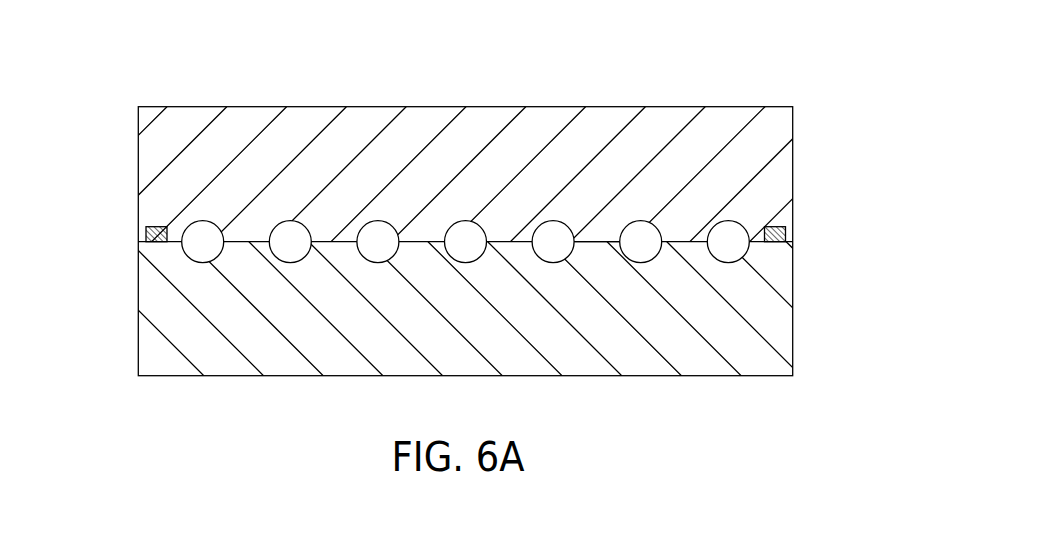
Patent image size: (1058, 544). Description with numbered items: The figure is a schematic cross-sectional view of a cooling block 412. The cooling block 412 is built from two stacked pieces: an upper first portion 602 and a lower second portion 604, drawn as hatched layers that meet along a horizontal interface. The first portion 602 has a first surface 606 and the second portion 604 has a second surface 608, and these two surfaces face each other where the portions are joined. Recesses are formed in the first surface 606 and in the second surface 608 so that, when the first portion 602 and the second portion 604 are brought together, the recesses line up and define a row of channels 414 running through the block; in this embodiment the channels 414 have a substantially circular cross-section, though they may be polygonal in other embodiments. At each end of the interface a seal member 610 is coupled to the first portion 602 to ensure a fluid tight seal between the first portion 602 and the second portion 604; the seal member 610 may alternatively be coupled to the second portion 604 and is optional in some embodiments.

The cooling block 412 is at (72, 92).
The first portion 602 is at (248, 132).
The second portion 604 is at (268, 347).
The first surface 606 is at (601, 230).
The second surface 608 is at (419, 252).
The channels 414 is at (382, 235).
The seal member 610 is at (146, 231).